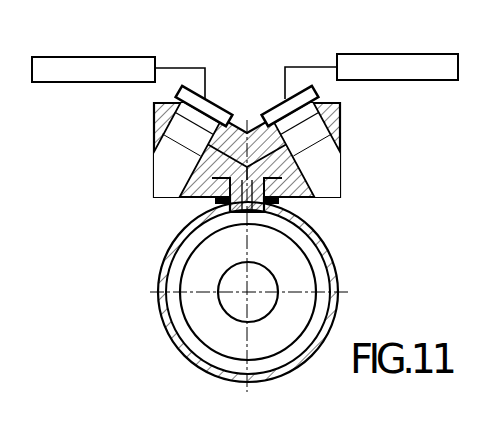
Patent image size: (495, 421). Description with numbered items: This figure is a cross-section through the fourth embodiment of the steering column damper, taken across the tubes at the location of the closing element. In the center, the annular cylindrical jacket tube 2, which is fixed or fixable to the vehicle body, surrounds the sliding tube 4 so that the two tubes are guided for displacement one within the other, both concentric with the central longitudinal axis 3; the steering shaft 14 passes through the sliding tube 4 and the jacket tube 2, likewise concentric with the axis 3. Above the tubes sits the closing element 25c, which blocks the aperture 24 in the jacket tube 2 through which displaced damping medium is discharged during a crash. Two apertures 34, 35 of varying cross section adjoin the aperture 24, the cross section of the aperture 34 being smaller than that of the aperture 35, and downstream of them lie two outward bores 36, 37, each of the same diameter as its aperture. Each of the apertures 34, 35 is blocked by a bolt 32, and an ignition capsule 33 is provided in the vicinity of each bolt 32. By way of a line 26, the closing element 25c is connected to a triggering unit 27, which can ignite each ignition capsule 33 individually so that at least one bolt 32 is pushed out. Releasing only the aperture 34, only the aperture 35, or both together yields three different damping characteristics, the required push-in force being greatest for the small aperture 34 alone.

The jacket tube 2 is at (335, 283).
The central longitudinal axis 3 is at (252, 295).
The sliding tube 4 is at (176, 282).
The steering shaft 14 is at (232, 298).
The aperture 24 is at (243, 209).
The closing element 25c is at (145, 140).
The line 26 is at (178, 68).
The triggering unit 27 is at (89, 65).
The bolt 32 is at (180, 152).
The ignition capsule 33 is at (295, 118).
The aperture 34 is at (195, 199).
The aperture 35 is at (307, 194).
The outward bore 36 is at (160, 128).
The outward bore 37 is at (328, 130).